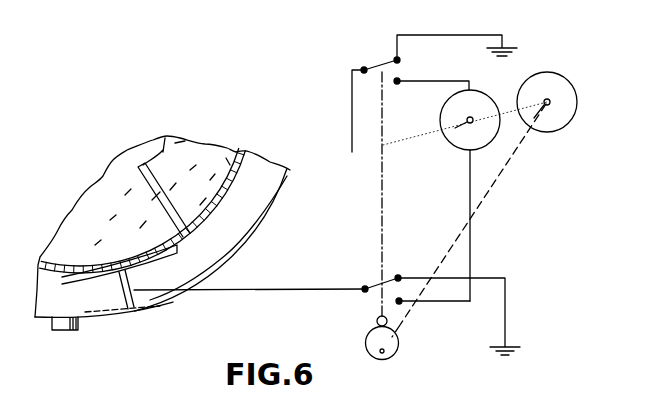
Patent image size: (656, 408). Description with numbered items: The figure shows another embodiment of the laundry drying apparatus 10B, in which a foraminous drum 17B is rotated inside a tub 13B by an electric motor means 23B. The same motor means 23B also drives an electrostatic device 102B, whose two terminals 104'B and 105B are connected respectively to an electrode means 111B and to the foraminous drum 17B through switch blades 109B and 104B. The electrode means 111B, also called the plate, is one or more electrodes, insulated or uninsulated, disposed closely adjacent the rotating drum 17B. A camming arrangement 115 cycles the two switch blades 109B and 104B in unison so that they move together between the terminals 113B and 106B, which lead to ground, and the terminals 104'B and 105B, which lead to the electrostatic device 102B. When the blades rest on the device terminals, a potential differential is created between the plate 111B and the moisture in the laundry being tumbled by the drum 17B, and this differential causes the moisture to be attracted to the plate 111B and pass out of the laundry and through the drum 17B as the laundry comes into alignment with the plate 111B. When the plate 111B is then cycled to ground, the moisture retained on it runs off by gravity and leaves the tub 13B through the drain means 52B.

The apparatus 10B is at (175, 96).
The foraminous drum 17B is at (236, 160).
The tub 13B is at (268, 221).
The electrode means 111B is at (98, 283).
The drain means 52B is at (78, 323).
The switch blade 104B is at (364, 67).
The terminal 106B is at (400, 59).
The terminal 105B is at (400, 80).
The electrostatic device 102B is at (433, 115).
The electric motor means 23B is at (567, 84).
The switch blade 109B is at (366, 292).
The terminal 113B is at (398, 275).
The terminal 104'B is at (433, 317).
The camming arrangement 115 is at (375, 365).